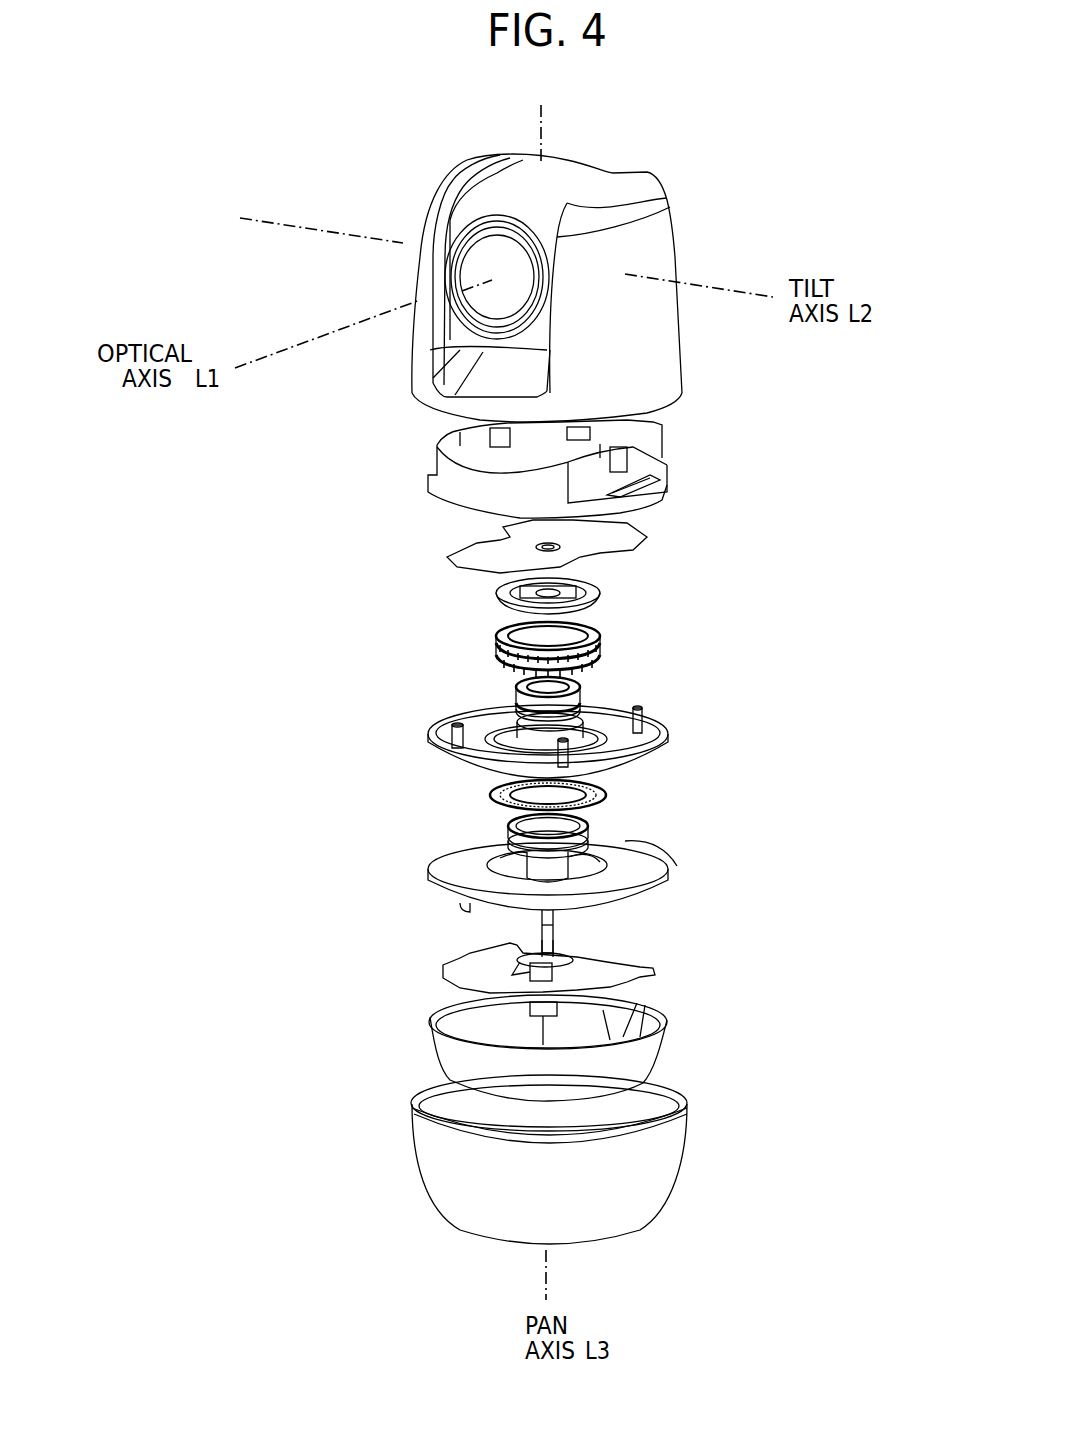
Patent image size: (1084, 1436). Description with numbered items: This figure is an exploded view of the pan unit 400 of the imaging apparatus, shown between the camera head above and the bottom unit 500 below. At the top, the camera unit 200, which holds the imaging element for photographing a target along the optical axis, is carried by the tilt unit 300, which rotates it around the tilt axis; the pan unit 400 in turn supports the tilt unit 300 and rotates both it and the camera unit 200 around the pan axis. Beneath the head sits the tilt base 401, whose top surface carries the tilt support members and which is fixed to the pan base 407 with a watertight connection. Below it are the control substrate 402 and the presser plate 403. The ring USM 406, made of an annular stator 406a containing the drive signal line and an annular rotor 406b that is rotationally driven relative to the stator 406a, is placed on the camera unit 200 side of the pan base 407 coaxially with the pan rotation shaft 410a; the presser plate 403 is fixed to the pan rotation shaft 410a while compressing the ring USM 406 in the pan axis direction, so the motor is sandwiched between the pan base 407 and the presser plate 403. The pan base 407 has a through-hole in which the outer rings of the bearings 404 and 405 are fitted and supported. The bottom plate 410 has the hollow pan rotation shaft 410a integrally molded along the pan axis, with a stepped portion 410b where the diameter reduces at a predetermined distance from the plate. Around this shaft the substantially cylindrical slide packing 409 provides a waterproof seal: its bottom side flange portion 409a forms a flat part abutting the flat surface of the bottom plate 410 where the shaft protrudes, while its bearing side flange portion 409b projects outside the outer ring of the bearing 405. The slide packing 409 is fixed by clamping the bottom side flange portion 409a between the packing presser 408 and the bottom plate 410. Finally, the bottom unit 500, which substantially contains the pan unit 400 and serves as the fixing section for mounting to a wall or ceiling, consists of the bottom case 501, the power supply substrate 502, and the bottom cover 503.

The camera unit 200 is at (411, 192).
The tilt unit 300 is at (683, 218).
The pan unit 400 is at (777, 588).
The tilt base 401 is at (437, 462).
The control substrate 402 is at (630, 540).
The presser plate 403 is at (498, 592).
The bearing 404 is at (518, 690).
The bearing 405 is at (518, 707).
The ring USM 406 is at (742, 597).
The annular stator 406a is at (600, 655).
The annular rotor 406b is at (600, 637).
The pan base 407 is at (665, 730).
The packing presser 408 is at (495, 790).
The slide packing 409 is at (590, 833).
The bottom side flange portion 409a is at (600, 852).
The bearing side flange portion 409b is at (575, 822).
The bottom plate 410 is at (463, 877).
The pan rotation shaft 410a is at (550, 868).
The stepped portion 410b is at (520, 865).
The bottom unit 500 is at (777, 1056).
The bottom case 501 is at (455, 1060).
The power supply substrate 502 is at (640, 985).
The bottom cover 503 is at (660, 1170).